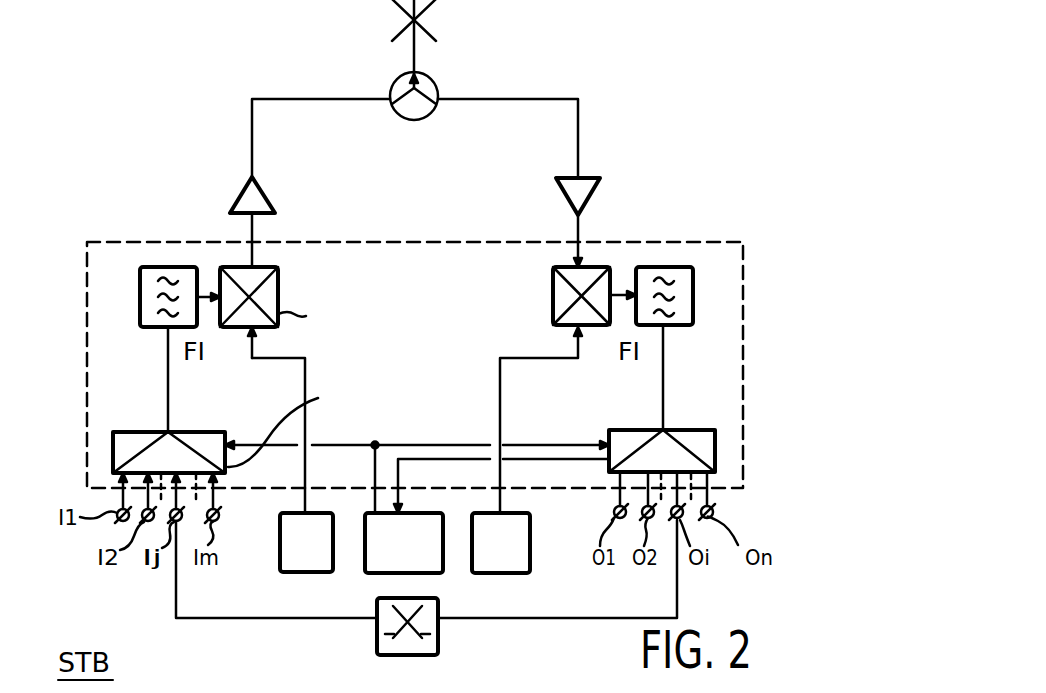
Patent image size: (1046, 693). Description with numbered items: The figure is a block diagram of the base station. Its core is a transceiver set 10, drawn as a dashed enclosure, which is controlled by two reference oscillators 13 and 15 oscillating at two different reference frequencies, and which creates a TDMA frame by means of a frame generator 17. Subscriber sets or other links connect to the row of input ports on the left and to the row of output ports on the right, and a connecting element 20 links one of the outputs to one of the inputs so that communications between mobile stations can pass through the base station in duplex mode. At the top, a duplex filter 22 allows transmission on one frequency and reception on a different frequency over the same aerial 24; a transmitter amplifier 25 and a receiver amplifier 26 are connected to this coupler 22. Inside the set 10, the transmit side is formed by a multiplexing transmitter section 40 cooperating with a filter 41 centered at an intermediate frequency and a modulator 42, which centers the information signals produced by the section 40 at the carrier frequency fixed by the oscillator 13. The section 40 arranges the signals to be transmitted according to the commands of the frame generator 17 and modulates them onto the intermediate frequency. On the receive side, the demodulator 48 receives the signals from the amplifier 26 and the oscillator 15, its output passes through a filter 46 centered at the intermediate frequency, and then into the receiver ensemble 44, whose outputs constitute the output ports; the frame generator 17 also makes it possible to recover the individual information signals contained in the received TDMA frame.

The transceiver set 10 is at (742, 239).
The reference oscillator 13 is at (280, 566).
The reference oscillator 15 is at (528, 570).
The TDMA frame generator 17 is at (367, 568).
The connecting element 20 is at (438, 632).
The duplex filter 22 is at (438, 88).
The aerial 24 is at (438, 22).
The transmitter amplifier 25 is at (268, 200).
The receiver amplifier 26 is at (596, 197).
The multiplexing transmitter section 40 is at (222, 432).
The filter 41 is at (140, 297).
The modulator 42 is at (278, 300).
The receiver ensemble 44 is at (640, 430).
The filter 46 is at (693, 300).
The demodulator 48 is at (553, 296).